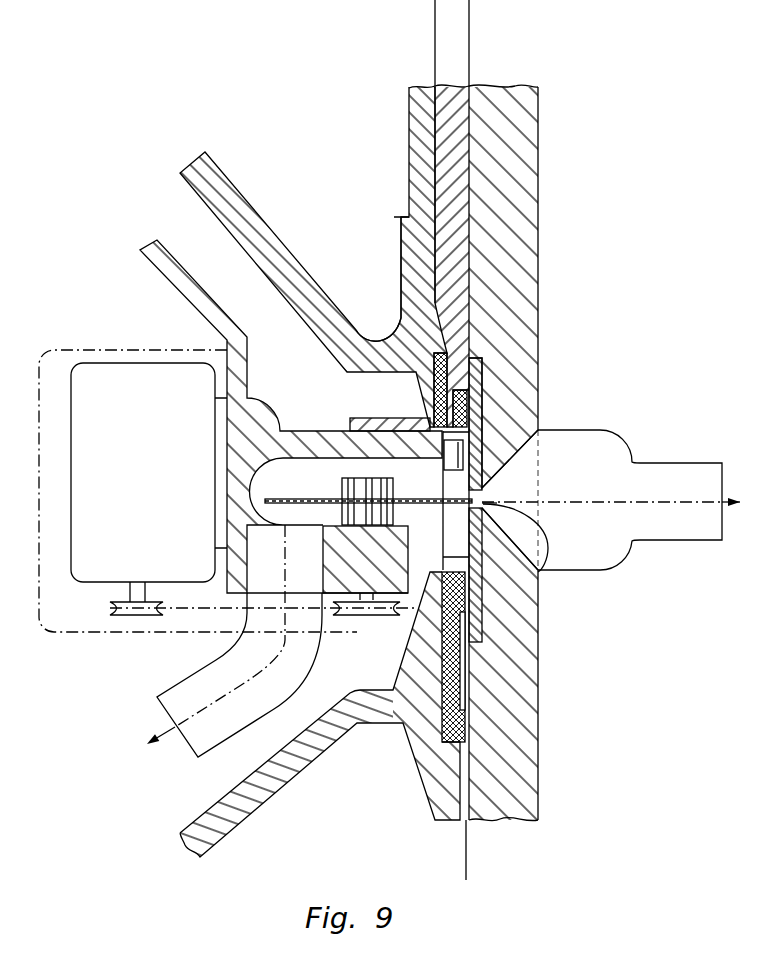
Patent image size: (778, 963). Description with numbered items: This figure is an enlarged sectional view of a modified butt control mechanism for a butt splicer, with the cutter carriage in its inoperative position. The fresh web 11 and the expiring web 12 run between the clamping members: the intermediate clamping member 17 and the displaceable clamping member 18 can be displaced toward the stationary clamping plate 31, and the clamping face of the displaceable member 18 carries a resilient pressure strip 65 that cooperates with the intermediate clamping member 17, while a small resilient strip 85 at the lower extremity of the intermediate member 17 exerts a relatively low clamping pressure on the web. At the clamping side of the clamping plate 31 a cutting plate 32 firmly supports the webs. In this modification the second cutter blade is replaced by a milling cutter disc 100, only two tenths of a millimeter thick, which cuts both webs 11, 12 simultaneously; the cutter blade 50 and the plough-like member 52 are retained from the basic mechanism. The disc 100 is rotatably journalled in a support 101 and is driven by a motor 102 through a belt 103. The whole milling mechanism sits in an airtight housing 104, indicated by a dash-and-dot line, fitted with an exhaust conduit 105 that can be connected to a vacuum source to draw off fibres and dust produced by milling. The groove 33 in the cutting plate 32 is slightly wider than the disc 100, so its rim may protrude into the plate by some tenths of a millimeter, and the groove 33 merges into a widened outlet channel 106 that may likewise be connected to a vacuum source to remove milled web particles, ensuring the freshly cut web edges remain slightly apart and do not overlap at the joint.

The fresh web 11 is at (433, 30).
The expiring web 12 is at (470, 32).
The intermediate clamping member 17 is at (447, 140).
The displaceable clamping member 18 is at (420, 230).
The clamping plate 31 is at (523, 270).
The cutting plate 32 is at (482, 373).
The small resilient strip 85 is at (486, 403).
The cutter blade 50 is at (472, 458).
The plough-like member 52 is at (531, 430).
The pressure strip 65 is at (393, 332).
The milling cutter disc 100 is at (300, 500).
The support 101 is at (387, 570).
The motor 102 is at (122, 385).
The belt 103 is at (165, 614).
The airtight housing 104 is at (95, 632).
The exhaust conduit 105 is at (285, 688).
The widened outlet channel 106 is at (608, 452).
The groove 33 is at (540, 572).